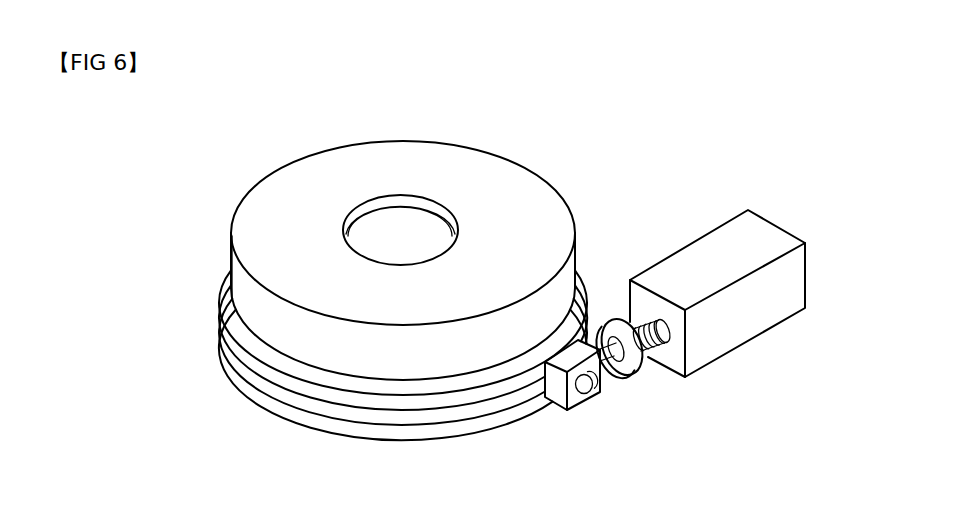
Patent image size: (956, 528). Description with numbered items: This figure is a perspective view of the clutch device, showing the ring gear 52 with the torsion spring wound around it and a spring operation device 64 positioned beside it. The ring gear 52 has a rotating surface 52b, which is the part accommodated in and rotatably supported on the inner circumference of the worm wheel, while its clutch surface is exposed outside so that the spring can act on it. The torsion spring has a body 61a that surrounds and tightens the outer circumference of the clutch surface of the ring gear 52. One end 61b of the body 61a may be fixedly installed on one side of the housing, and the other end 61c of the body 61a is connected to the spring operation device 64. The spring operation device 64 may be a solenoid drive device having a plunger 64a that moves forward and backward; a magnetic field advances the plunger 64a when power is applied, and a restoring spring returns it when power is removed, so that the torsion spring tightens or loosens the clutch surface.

The ring gear 52 is at (372, 260).
The rotating surface 52b is at (248, 293).
The body 61a is at (347, 440).
The one end 61b is at (232, 234).
The other end 61c is at (583, 411).
The spring operation device 64 is at (771, 349).
The plunger 64a is at (607, 378).